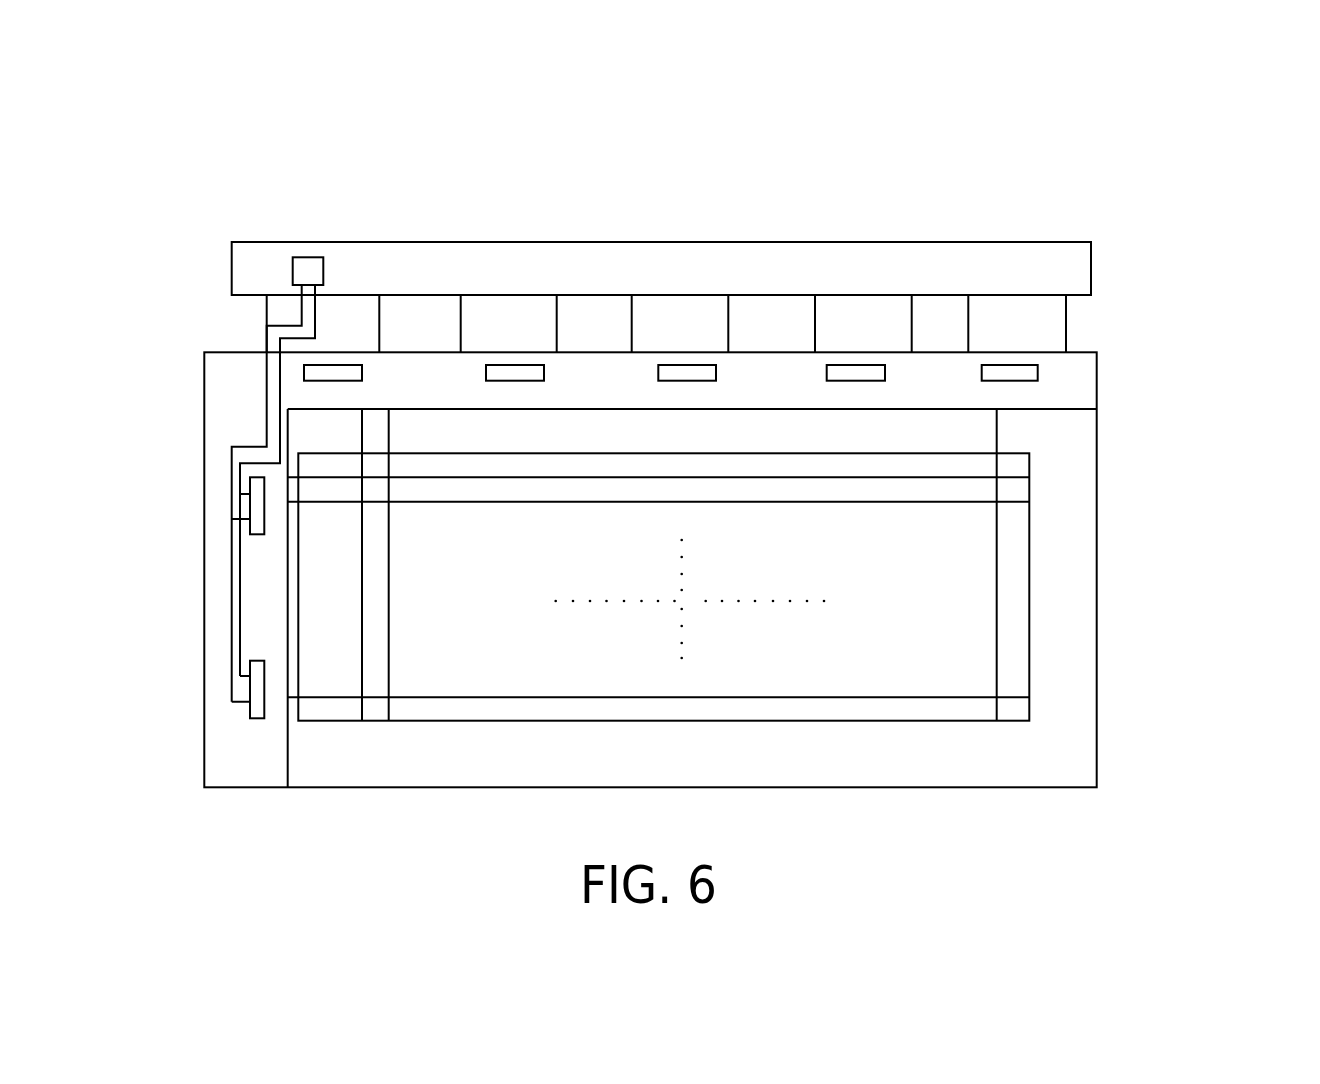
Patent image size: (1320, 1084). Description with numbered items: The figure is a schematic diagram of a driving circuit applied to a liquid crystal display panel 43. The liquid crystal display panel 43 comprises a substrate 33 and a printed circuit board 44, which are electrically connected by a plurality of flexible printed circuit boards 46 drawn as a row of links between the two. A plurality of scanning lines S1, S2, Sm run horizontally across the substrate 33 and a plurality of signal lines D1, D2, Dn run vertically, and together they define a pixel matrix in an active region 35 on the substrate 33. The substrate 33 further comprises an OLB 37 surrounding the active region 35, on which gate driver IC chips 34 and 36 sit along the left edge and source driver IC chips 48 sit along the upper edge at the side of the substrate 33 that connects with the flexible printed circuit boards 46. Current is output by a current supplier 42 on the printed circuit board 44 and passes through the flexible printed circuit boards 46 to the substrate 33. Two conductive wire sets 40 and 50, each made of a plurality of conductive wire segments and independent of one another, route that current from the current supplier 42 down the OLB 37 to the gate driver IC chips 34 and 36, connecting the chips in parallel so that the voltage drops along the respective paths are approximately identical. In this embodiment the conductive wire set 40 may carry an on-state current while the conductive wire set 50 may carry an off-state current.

The liquid crystal display panel 43 is at (1141, 162).
The printed circuit board 44 is at (1078, 270).
The current supplier 42 is at (323, 268).
The flexible printed circuit board 46 is at (1060, 327).
The source driver IC chips 48 is at (1038, 379).
The substrate 33 is at (1097, 630).
The OLB 37 is at (252, 770).
The active region 35 is at (1029, 585).
The gate driver IC chip 34 is at (264, 505).
The gate driver IC chip 36 is at (264, 688).
The conductive wire set 40 is at (232, 577).
The conductive wire set 50 is at (240, 638).
The scanning line S1 is at (1012, 477).
The scanning line S2 is at (1012, 501).
The scanning line Sm is at (1012, 697).
The signal line D1 is at (360, 708).
The signal line D2 is at (390, 708).
The signal line Dn is at (997, 707).